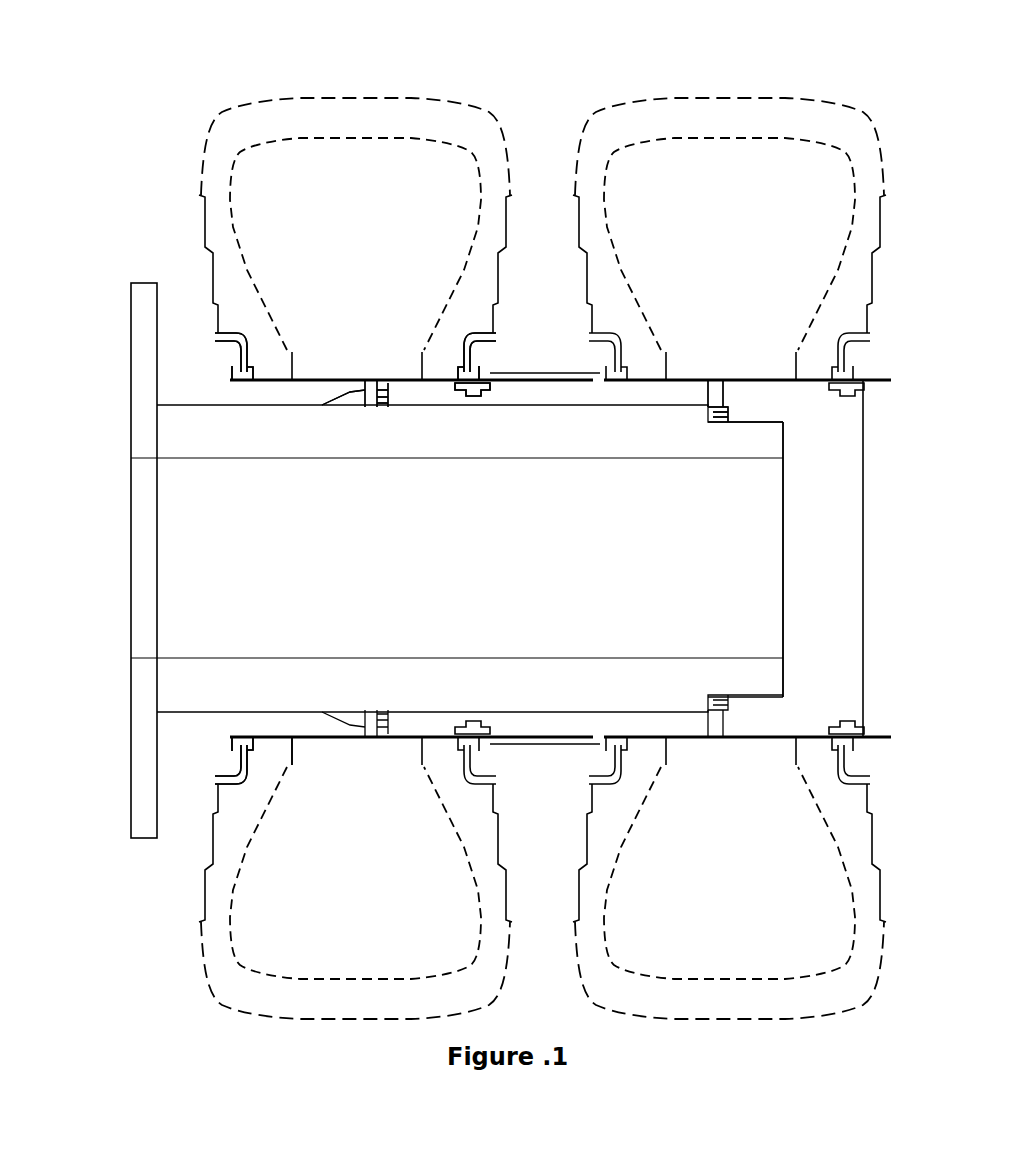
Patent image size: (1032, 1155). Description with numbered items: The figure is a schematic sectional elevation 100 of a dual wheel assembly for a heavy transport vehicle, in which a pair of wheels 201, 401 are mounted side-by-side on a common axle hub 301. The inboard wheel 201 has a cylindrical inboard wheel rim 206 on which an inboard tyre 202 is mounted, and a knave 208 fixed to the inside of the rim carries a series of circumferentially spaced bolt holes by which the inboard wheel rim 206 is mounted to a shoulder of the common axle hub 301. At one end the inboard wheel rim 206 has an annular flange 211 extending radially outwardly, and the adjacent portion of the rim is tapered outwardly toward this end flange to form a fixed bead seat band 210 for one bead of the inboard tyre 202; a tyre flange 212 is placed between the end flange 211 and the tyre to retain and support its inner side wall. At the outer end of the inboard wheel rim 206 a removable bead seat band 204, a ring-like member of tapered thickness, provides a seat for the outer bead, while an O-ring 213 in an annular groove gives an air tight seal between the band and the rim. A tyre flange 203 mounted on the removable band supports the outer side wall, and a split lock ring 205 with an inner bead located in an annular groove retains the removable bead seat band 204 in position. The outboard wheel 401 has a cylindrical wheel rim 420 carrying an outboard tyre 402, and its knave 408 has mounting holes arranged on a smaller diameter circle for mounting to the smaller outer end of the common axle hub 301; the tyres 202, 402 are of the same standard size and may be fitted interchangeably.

The schematic sectional elevation 100 is at (174, 48).
The inboard wheel 201 is at (365, 74).
The inboard tyre 202 is at (473, 133).
The tyre flange 203 is at (476, 332).
The removable bead seat band 204 is at (467, 362).
The split lock ring 205 is at (476, 372).
The inboard wheel rim 206 is at (240, 390).
The knave 208 is at (362, 387).
The fixed bead seat band 210 is at (270, 738).
The annular flange 211 is at (232, 741).
The tyre flange 212 is at (220, 777).
The O-ring 213 is at (458, 380).
The common axle hub 301 is at (148, 442).
The outboard wheel 401 is at (733, 74).
The outboard tyre 402 is at (830, 133).
The knave 408 is at (723, 410).
The cylindrical wheel rim 420 is at (832, 557).